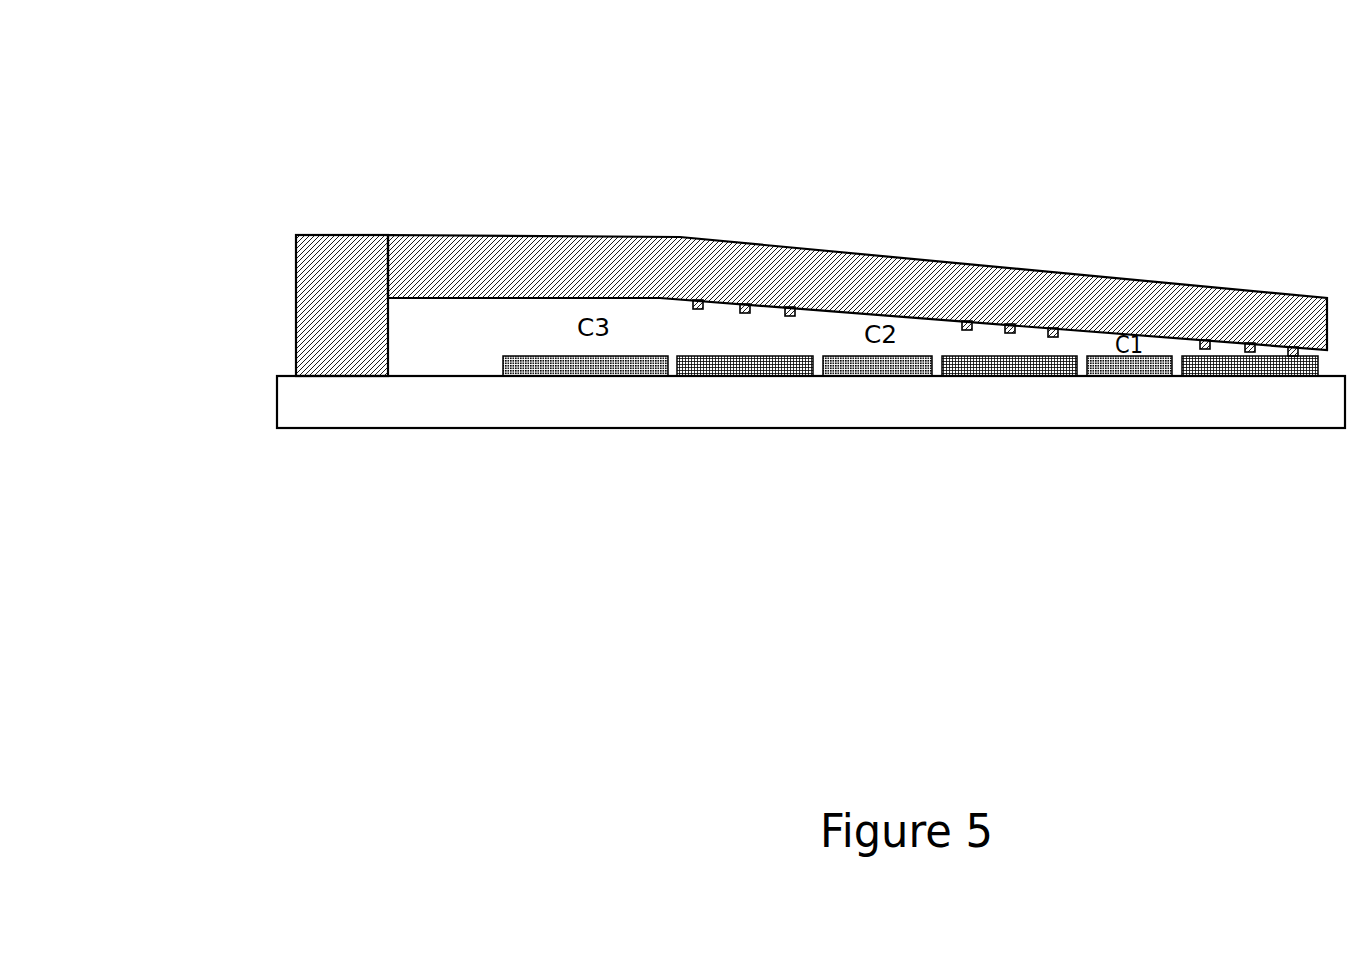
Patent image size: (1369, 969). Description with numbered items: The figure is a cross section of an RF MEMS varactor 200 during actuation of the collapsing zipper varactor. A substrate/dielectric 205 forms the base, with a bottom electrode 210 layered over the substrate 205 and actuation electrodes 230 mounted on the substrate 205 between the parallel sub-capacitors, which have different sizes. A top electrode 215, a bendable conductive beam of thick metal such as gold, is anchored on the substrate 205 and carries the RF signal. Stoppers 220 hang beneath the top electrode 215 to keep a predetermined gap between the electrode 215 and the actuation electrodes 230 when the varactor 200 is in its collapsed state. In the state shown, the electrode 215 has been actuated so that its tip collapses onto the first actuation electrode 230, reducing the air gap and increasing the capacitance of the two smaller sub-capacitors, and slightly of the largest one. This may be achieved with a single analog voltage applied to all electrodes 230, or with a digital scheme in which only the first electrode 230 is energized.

The RF MEMS varactor 200 is at (857, 265).
The substrate/dielectric 205 is at (268, 407).
The bottom electrode 210 is at (537, 398).
The top electrode 215 is at (287, 316).
The stoppers 220 is at (784, 296).
The actuation electrodes 230 is at (762, 394).